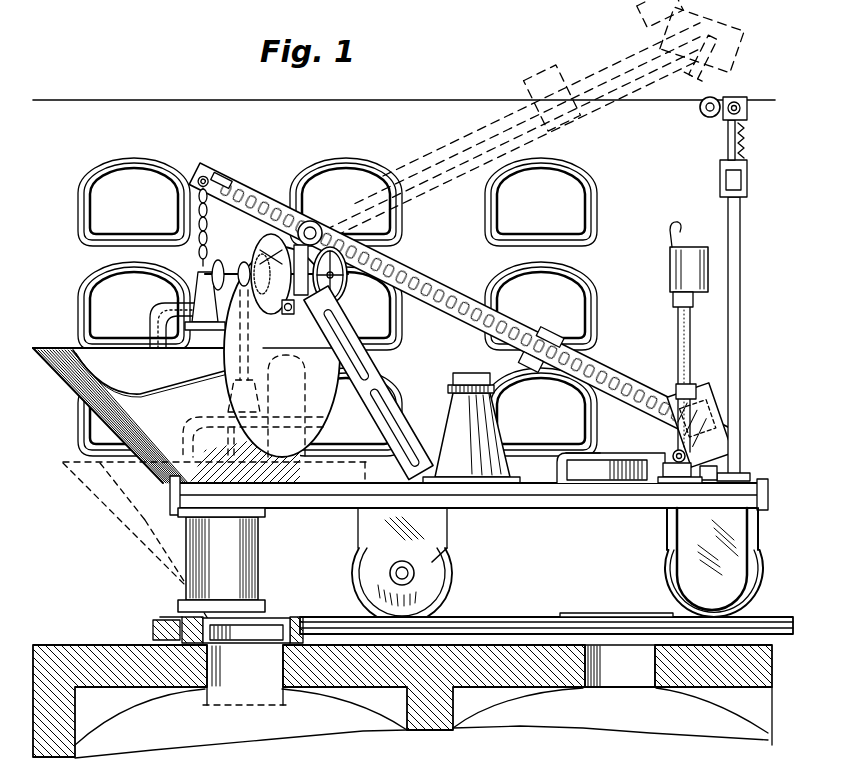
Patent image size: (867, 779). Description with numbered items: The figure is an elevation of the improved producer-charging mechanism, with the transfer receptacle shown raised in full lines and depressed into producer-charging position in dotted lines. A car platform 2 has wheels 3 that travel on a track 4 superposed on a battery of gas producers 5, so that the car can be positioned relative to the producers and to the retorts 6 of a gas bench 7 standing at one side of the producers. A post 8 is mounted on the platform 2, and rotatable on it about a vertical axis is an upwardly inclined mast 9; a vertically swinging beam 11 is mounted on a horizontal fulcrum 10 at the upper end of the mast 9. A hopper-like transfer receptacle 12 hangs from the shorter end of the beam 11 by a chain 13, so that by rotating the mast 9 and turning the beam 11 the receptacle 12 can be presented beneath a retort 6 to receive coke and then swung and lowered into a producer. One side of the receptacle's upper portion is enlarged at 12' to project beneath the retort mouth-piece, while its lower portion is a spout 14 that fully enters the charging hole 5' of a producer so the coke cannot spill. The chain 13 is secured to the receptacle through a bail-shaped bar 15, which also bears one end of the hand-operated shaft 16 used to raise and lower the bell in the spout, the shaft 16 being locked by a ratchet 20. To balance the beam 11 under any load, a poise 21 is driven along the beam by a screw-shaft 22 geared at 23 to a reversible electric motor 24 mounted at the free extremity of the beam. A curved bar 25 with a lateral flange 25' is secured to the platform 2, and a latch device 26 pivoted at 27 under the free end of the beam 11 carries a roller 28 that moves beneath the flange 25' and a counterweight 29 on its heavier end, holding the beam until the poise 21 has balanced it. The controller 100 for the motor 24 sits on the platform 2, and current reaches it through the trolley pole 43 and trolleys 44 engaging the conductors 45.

The car platform 2 is at (583, 498).
The wheels 3 is at (444, 585).
The track 4 is at (762, 621).
The gas producers 5 is at (402, 701).
The charging hole 5' is at (414, 671).
The retorts 6 is at (597, 220).
The gas bench 7 is at (533, 121).
The post 8 is at (456, 383).
The mast 9 is at (408, 372).
The fulcrum 10 is at (312, 221).
The beam 11 is at (409, 269).
The transfer receptacle 12 is at (201, 485).
The enlarged upper portion 12' is at (65, 332).
The chain 13 is at (202, 251).
The spout 14 is at (200, 562).
The bail-shaped bar 15 is at (150, 309).
The hand-operated shaft 16 is at (240, 262).
The ratchet 20 is at (291, 383).
The poise 21 is at (588, 351).
The screw-shaft 22 is at (678, 414).
The gearing 23 is at (688, 396).
The reversible electric motor 24 is at (736, 416).
The curved bar 25 is at (592, 465).
The flange 25' is at (610, 436).
The latch device 26 is at (681, 479).
The pivot 27 is at (688, 478).
The roller 28 is at (665, 480).
The counterweight 29 is at (718, 469).
The trolley pole 43 is at (744, 265).
The trolleys 44 is at (704, 114).
The conductors 45 is at (406, 83).
The controller 100 is at (676, 248).